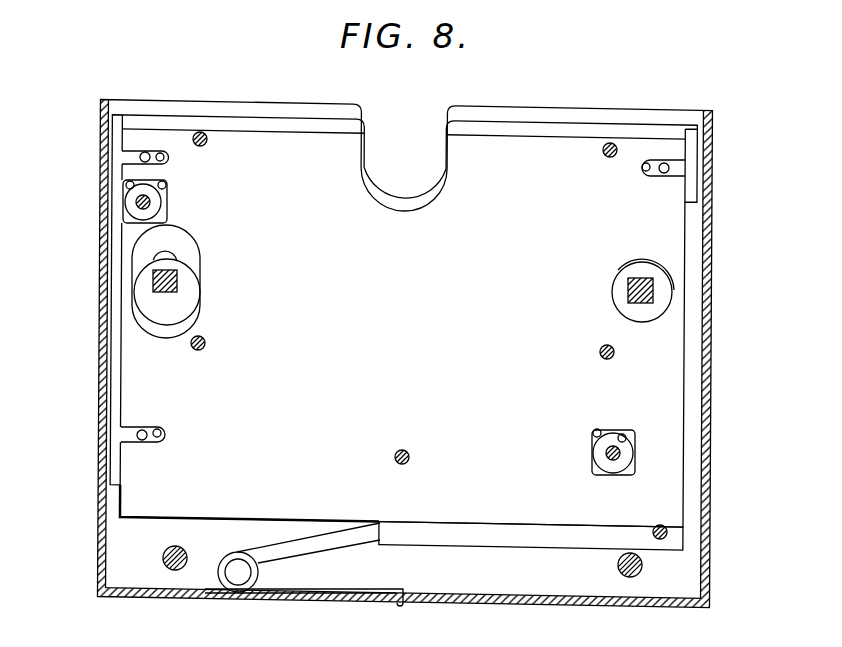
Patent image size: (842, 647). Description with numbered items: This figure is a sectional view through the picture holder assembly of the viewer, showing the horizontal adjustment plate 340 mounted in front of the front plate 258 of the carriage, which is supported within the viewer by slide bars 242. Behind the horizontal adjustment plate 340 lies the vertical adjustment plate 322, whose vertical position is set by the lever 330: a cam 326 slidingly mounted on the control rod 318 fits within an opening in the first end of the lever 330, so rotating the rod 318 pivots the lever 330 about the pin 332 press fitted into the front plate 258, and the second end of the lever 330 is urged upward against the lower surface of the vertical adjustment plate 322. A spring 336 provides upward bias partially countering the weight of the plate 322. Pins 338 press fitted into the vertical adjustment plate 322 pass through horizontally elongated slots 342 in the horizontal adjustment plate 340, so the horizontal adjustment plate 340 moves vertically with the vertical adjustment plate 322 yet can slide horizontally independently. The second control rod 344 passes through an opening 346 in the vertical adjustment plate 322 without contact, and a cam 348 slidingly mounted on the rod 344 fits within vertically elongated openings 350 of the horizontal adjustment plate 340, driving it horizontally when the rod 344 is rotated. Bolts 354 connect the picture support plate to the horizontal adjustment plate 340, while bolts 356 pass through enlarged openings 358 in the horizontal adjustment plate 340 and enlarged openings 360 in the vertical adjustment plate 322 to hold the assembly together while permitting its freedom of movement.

The slide bars 242 is at (172, 570).
The front plate 258 is at (713, 190).
The control rod 318 is at (628, 290).
The vertical adjustment plate 322 is at (503, 128).
The cam 326 is at (655, 310).
The lever 330 is at (497, 535).
The pin 332 is at (660, 526).
The spring 336 is at (345, 547).
The pins 338 is at (140, 157).
The horizontal adjustment plate 340 is at (277, 145).
The horizontally elongated slots 342 is at (160, 150).
The control rod 344 is at (178, 282).
The opening 346 is at (170, 250).
The cam 348 is at (183, 303).
The vertically elongated openings 350 is at (197, 262).
The bolts 354 is at (204, 133).
The bolts 356 is at (138, 201).
The enlarged openings 358 is at (166, 184).
The enlarged openings 360 is at (128, 186).